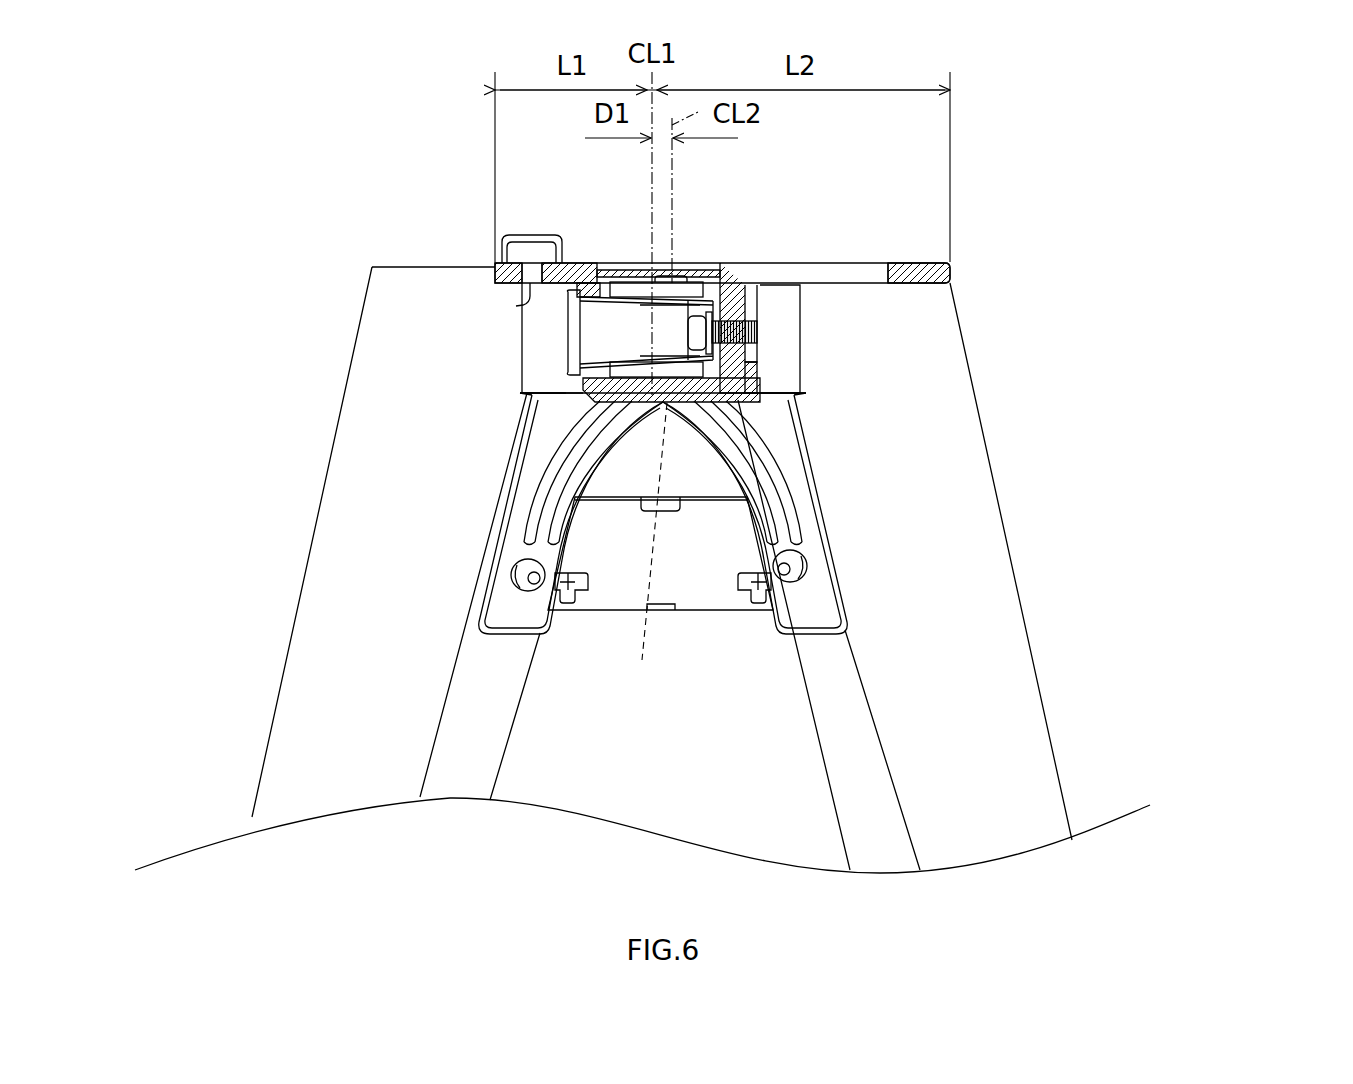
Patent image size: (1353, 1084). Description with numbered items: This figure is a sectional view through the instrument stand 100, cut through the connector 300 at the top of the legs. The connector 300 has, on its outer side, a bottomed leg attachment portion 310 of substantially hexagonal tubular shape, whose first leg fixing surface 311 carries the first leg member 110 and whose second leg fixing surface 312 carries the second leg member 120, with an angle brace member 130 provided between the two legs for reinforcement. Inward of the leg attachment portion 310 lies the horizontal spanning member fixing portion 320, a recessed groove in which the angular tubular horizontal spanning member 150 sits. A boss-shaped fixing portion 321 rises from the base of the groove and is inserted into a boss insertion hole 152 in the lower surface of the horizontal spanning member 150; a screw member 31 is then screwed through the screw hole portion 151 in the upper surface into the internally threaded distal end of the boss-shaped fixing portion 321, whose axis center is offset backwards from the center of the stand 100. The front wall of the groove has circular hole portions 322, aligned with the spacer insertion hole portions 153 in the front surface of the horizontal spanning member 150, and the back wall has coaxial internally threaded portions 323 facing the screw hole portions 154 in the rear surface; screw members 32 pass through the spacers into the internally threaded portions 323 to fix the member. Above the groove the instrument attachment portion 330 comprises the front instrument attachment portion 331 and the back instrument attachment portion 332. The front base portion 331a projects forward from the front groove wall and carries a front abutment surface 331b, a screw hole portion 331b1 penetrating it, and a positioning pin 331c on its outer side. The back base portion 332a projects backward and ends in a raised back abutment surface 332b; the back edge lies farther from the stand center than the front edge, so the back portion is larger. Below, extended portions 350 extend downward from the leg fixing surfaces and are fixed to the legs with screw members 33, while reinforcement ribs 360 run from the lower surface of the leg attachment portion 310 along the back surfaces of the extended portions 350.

The stand 100 is at (1070, 148).
The first leg member 110 is at (340, 690).
The second leg member 120 is at (945, 462).
The angle brace member 130 is at (659, 639).
The horizontal spanning member 150 is at (656, 262).
The screw hole portion 151 is at (713, 297).
The boss insertion hole 152 is at (650, 588).
The spacer insertion hole portion 153 is at (618, 275).
The screw hole portion 154 is at (700, 325).
The connector 300 is at (855, 255).
The leg attachment portion 310 is at (667, 335).
The first leg fixing surface 311 is at (517, 337).
The second leg fixing surface 312 is at (805, 355).
The horizontal spanning member fixing portion 320 is at (423, 378).
The boss-shaped fixing portion 321 is at (760, 251).
The circular hole portion 322 is at (590, 292).
The internally threaded portion 323 is at (750, 310).
The instrument attachment portion 330 is at (746, 246).
The front instrument attachment portion 331 is at (381, 246).
The front base portion 331a is at (493, 275).
The front abutment surface 331b is at (530, 262).
The screw hole portion 331b1 is at (517, 305).
The positioning pin 331c is at (494, 205).
The back instrument attachment portion 332 is at (1107, 212).
The back base portion 332a is at (1120, 242).
The back abutment surface 332b is at (921, 262).
The extended portion 350 is at (513, 613).
The reinforcement rib 360 is at (669, 587).
The screw member 31 is at (677, 268).
The screw member 32 is at (742, 600).
The screw member 33 is at (525, 587).